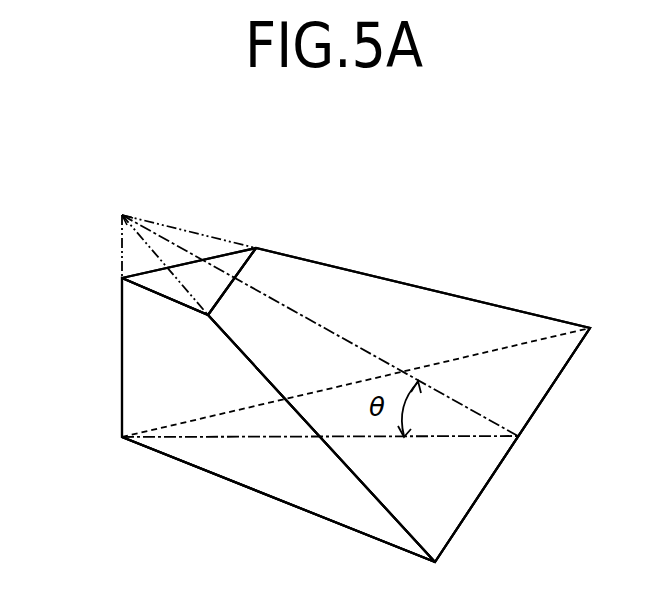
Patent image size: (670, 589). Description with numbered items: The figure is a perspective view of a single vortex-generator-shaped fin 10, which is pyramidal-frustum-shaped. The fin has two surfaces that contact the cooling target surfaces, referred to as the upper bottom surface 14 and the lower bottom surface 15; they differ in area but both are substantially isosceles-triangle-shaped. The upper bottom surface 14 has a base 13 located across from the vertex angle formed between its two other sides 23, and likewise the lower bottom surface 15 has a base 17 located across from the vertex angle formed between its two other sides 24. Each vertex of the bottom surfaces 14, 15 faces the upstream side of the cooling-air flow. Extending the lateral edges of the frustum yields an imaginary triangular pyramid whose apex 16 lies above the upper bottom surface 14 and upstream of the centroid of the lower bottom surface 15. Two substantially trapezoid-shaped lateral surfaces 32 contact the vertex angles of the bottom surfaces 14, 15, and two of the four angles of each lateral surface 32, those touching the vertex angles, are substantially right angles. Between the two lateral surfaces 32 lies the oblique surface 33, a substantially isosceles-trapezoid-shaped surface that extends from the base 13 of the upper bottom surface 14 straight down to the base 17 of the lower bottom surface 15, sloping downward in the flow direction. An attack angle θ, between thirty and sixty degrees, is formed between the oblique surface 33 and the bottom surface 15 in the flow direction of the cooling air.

The vortex-generator-shaped fin 10 is at (505, 237).
The base 13 is at (243, 265).
The upper bottom surface 14 is at (228, 262).
The lower bottom surface 15 is at (470, 473).
The apex 16 is at (122, 215).
The base 17 is at (537, 415).
The sides 23 is at (163, 293).
The sides 24 is at (310, 513).
The lateral surfaces 32 is at (147, 362).
The oblique surface 33 is at (380, 278).